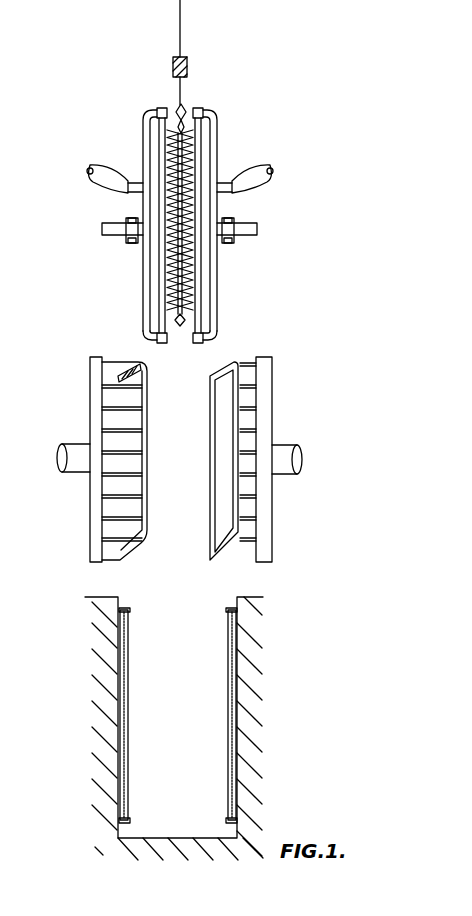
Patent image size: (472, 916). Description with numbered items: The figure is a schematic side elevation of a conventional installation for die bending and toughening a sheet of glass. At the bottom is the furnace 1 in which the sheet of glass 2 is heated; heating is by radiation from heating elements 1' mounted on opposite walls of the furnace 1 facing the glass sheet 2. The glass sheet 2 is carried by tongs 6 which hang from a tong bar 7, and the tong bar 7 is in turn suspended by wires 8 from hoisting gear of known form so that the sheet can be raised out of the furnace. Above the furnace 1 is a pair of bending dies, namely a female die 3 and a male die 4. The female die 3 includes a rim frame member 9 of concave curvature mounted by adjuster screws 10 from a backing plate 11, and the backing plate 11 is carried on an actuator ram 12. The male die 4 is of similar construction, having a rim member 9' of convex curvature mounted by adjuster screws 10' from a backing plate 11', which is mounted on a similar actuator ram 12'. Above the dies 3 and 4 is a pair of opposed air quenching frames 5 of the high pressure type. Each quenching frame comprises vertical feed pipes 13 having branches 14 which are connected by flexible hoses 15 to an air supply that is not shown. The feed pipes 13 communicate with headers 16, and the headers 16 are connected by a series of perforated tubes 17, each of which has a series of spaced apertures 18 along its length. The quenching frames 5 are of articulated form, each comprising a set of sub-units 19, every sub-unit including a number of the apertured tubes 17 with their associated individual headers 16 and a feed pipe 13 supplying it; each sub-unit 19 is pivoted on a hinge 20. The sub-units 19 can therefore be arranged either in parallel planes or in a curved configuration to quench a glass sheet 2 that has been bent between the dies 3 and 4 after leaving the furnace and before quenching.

The furnace 1 is at (174, 752).
The heating elements 1' is at (170, 715).
The sheet of glass 2 is at (188, 302).
The female die 3 is at (111, 459).
The male die 4 is at (258, 459).
The air quenching frames 5 is at (141, 127).
The tongs 6 is at (187, 110).
The tong bar 7 is at (188, 67).
The wires 8 is at (181, 20).
The rim frame member 9 is at (150, 377).
The rim member 9' is at (205, 461).
The adjuster screws 10 is at (147, 463).
The adjuster screws 10' is at (211, 453).
The backing plate 11 is at (67, 459).
The backing plate 11' is at (292, 459).
The actuator ram 12 is at (60, 478).
The actuator ram 12' is at (311, 457).
The vertical feed pipes 13 is at (158, 283).
The branches 14 is at (136, 181).
The flexible hoses 15 is at (100, 181).
The headers 16 is at (158, 108).
The perforated tubes 17 is at (162, 303).
The apertures 18 is at (196, 202).
The sub-units 19 is at (218, 262).
The hinge 20 is at (256, 228).